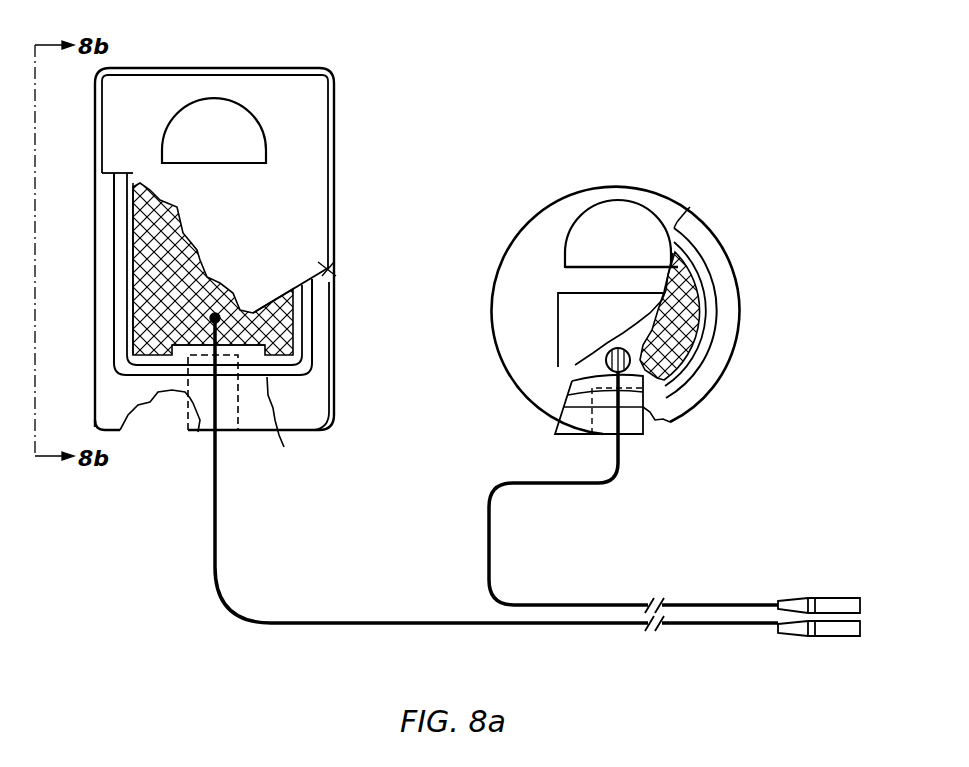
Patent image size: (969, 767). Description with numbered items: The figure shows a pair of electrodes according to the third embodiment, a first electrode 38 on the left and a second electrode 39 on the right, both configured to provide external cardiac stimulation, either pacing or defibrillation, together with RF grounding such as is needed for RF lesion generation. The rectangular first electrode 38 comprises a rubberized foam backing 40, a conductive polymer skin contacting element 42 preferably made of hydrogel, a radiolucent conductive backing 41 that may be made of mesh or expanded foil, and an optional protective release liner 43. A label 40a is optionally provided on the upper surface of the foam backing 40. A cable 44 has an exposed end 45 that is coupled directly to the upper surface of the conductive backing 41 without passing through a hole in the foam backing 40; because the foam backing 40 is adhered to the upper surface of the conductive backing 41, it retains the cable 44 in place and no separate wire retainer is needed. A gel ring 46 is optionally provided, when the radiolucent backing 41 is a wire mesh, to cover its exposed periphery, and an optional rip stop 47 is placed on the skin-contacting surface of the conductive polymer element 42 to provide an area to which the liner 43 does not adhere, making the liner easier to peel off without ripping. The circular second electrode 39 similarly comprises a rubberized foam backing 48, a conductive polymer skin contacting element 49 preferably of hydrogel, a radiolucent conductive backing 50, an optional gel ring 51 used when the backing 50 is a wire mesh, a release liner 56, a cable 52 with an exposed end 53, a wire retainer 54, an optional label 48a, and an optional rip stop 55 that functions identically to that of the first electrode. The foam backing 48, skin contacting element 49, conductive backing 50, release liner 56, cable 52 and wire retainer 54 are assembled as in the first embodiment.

The first electrode 38 is at (301, 66).
The second electrode 39 is at (629, 186).
The foam backing 40 is at (318, 273).
The label 40a is at (262, 122).
The radiolucent conductive backing 41 is at (133, 203).
The conductive polymer skin contacting element 42 is at (285, 426).
The protective release liner 43 is at (334, 161).
The cable 44 is at (212, 510).
The exposed end 45 is at (210, 320).
The gel ring 46 is at (127, 232).
The rip stop 47 is at (197, 425).
The rubberized foam backing 48 is at (523, 397).
The label 48a is at (652, 213).
The conductive polymer skin contacting element 49 is at (716, 332).
The radiolucent conductive backing 50 is at (706, 282).
The gel ring 51 is at (716, 228).
The cable 52 is at (490, 543).
The exposed end 53 is at (606, 361).
The wire retainer 54 is at (570, 318).
The rip stop 55 is at (645, 408).
The release liner 56 is at (705, 307).